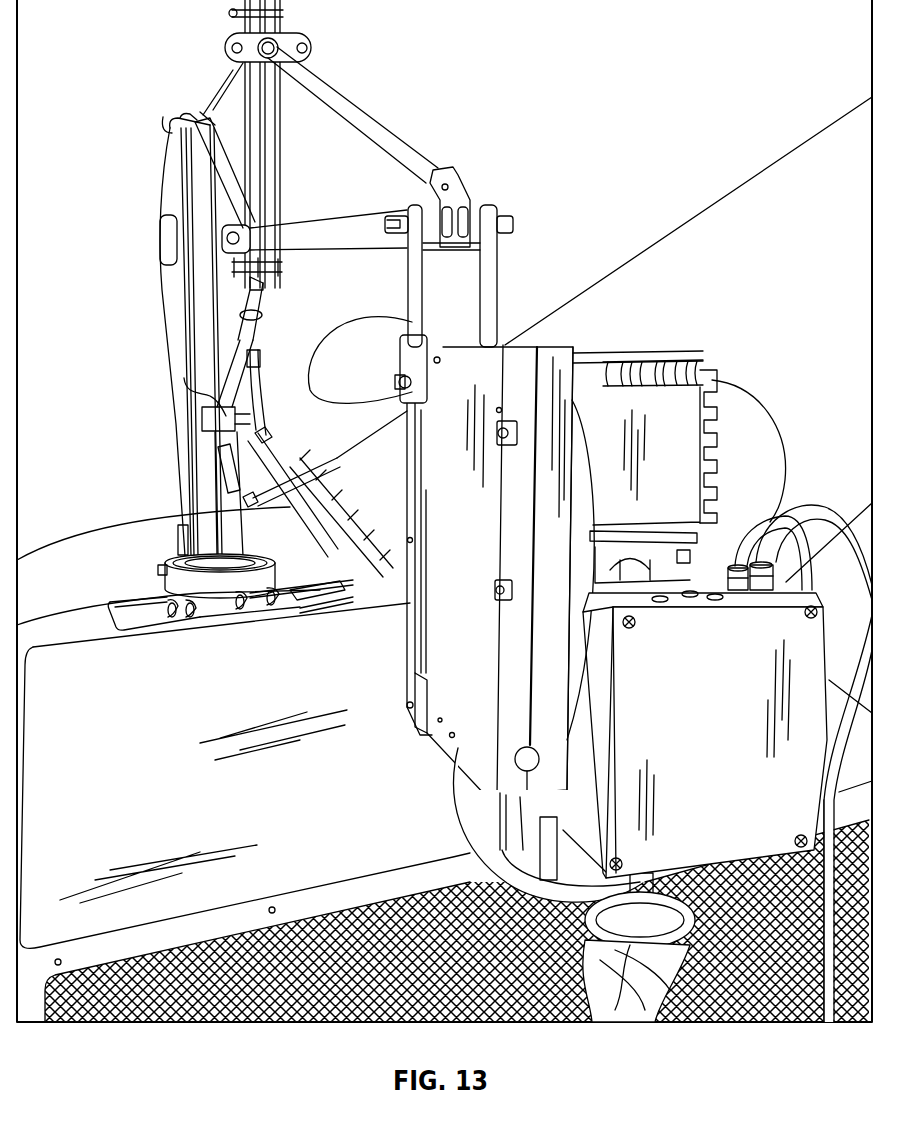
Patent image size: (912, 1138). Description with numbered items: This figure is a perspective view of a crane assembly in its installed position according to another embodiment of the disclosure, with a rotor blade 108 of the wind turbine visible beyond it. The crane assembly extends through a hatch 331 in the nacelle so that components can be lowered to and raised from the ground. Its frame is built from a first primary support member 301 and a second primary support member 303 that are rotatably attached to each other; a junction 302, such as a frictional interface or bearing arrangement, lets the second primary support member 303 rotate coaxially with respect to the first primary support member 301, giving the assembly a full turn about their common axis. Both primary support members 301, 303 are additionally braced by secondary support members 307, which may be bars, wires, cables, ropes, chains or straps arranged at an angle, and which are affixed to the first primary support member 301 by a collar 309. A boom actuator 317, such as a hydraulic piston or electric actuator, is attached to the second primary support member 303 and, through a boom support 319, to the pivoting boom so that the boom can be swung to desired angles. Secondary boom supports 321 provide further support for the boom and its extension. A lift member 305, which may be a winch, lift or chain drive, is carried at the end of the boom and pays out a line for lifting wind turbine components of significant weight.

The rotor blade 108 is at (722, 194).
The first primary support member 301 is at (223, 622).
The junction 302 is at (297, 602).
The second primary support member 303 is at (177, 478).
The lift member 305 is at (690, 443).
The secondary support members 307 is at (168, 618).
The collar 309 is at (165, 580).
The boom actuator 317 is at (263, 360).
The boom support 319 is at (283, 158).
The secondary boom supports 321 is at (226, 80).
The hatch 331 is at (267, 610).